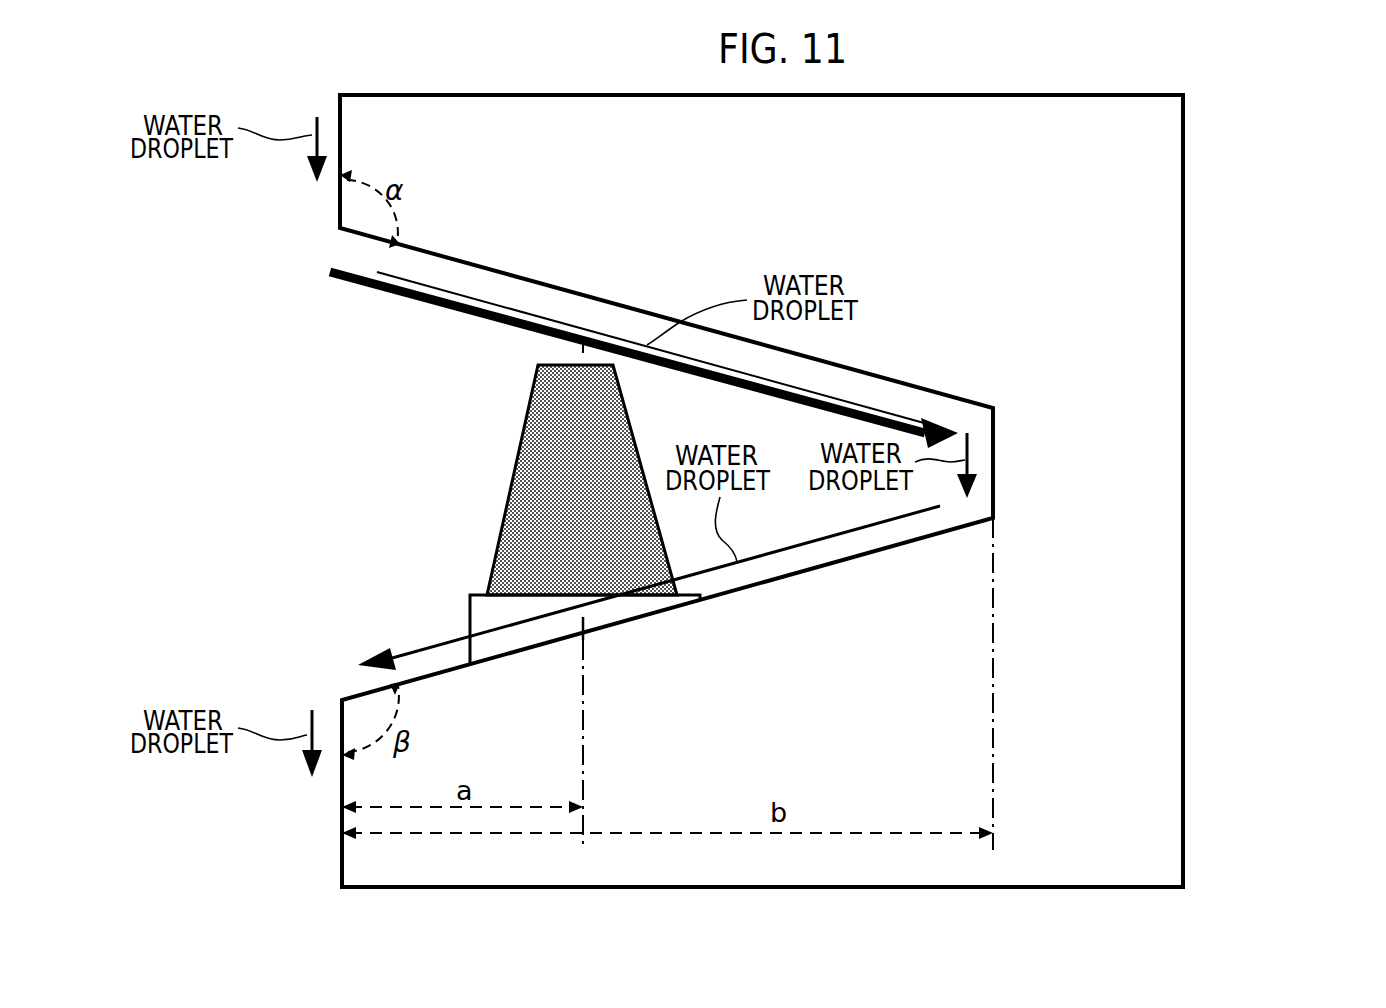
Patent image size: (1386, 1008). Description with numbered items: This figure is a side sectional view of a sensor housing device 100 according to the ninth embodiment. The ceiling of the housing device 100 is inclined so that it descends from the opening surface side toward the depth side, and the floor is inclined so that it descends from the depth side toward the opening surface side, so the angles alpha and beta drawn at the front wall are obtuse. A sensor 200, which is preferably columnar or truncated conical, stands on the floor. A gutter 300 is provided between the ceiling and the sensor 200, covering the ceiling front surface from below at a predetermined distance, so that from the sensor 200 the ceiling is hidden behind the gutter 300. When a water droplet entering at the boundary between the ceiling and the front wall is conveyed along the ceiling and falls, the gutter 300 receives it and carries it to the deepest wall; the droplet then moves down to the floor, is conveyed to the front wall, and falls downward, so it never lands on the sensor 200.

The sensor housing device 100 is at (1183, 487).
The sensor 200 is at (526, 415).
The gutter 300 is at (378, 284).